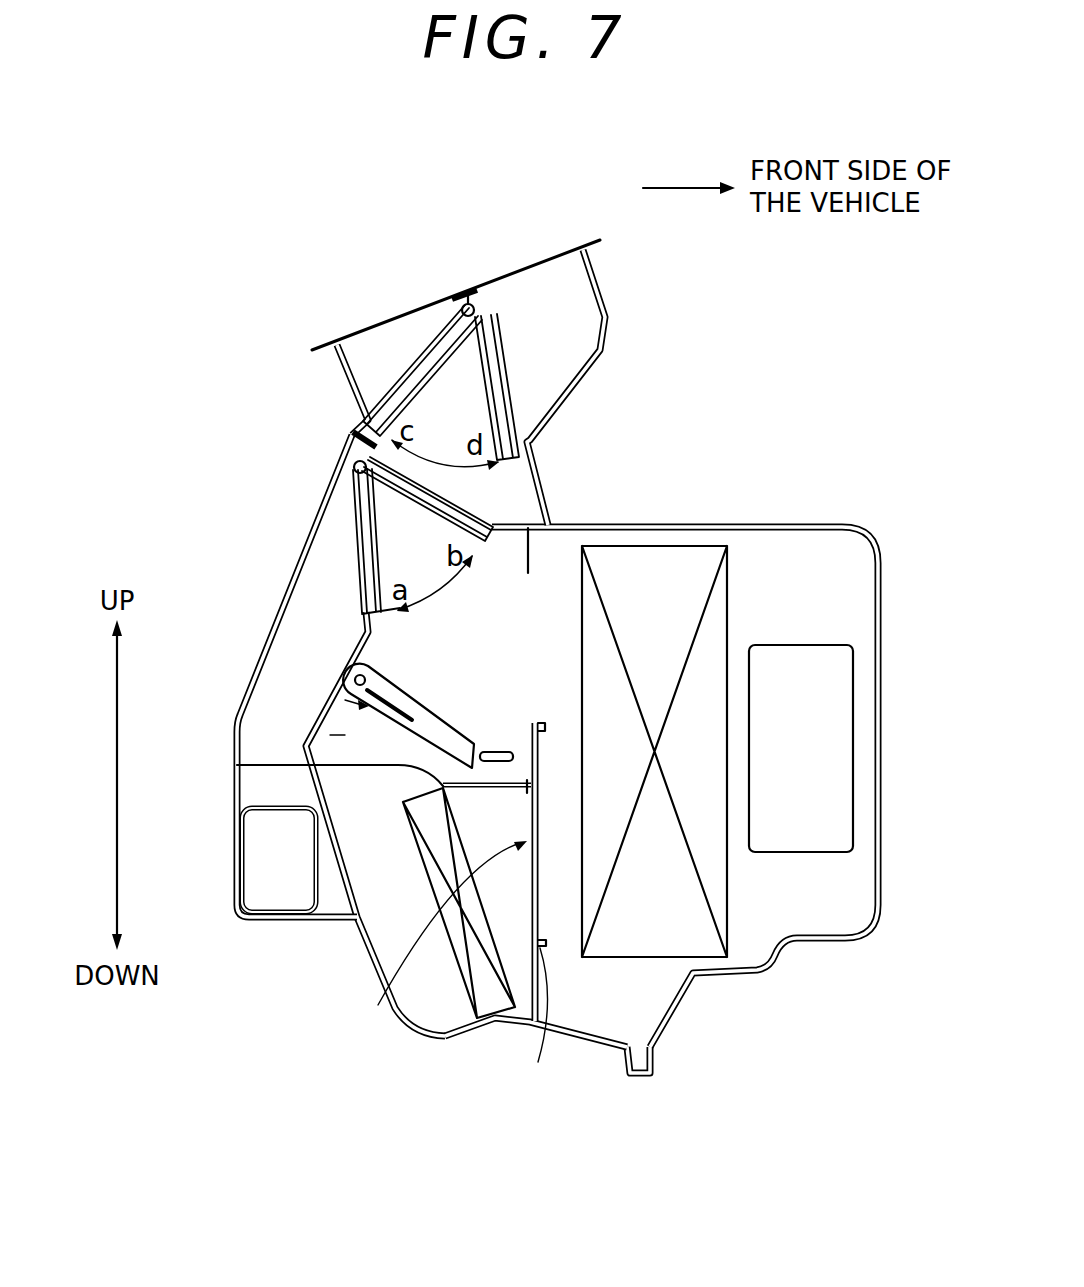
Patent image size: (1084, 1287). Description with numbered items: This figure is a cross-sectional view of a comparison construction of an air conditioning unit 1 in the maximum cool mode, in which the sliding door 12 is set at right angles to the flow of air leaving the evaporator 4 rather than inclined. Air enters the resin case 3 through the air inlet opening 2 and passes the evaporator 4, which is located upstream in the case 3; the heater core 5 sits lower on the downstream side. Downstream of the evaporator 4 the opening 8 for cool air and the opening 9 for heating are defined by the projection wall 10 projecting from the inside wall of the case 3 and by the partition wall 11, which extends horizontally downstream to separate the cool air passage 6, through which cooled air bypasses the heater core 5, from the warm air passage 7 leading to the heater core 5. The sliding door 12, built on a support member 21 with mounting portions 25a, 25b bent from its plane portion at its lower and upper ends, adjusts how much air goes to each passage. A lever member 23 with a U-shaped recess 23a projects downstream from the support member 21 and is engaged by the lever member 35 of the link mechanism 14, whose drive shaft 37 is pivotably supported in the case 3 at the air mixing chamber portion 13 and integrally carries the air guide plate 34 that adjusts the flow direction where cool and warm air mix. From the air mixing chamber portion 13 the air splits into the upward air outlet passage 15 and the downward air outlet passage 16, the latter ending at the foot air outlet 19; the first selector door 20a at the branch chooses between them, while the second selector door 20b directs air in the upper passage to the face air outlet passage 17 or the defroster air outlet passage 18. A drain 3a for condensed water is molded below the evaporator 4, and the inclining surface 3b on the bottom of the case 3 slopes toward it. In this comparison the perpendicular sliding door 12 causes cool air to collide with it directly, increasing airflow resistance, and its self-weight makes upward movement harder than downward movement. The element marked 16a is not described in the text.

The air conditioning unit 1 is at (768, 504).
The air inlet opening 2 is at (833, 644).
The case 3 is at (813, 523).
The drain 3a is at (641, 1074).
The inclining surface 3b is at (597, 1050).
The evaporator 4 is at (685, 573).
The heater core 5 is at (443, 897).
The cool air passage 6 is at (467, 638).
The warm air passage 7 is at (477, 857).
The opening for cool air 8 is at (527, 580).
The opening for heating 9 is at (520, 968).
The projection wall 10 is at (528, 556).
The partition wall 11 is at (237, 765).
The sliding door 12 is at (527, 880).
The air mixing chamber portion 13 is at (437, 638).
The link mechanism 14 is at (355, 692).
The air outlet passage 15 is at (430, 407).
The air outlet passage 16 is at (322, 603).
The wall portion 16a is at (345, 735).
The face air outlet passage 17 is at (348, 345).
The defroster air outlet passage 18 is at (515, 298).
The foot air outlet 19 is at (272, 898).
The first selector door 20a is at (353, 522).
The second selector door 20b is at (497, 363).
The support member 21 is at (520, 918).
The lever member 23 is at (522, 752).
The U-shaped recess 23a is at (505, 750).
The mounting portion 25a is at (533, 1019).
The mounting portion 25b is at (560, 713).
The air guide plate 34 is at (350, 680).
The lever member 35 is at (380, 722).
The drive shaft 37 is at (350, 600).